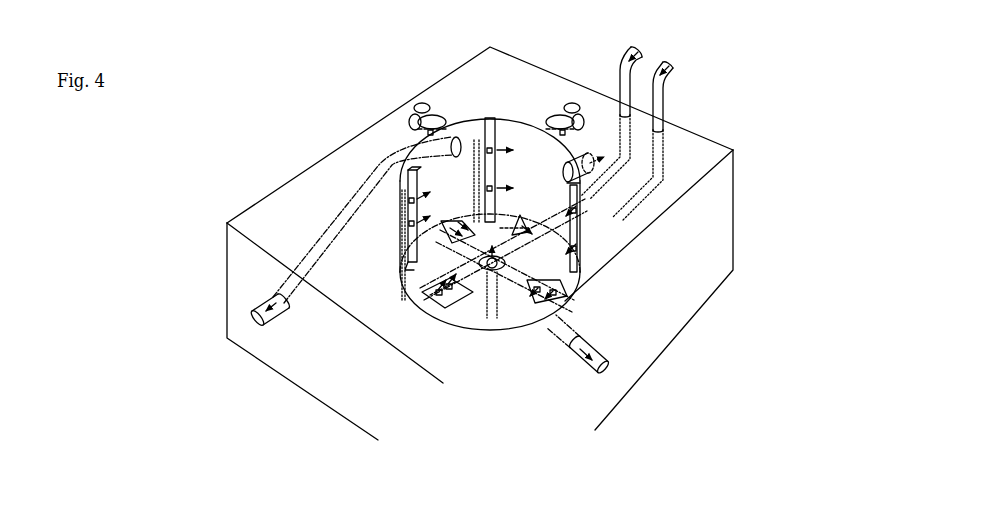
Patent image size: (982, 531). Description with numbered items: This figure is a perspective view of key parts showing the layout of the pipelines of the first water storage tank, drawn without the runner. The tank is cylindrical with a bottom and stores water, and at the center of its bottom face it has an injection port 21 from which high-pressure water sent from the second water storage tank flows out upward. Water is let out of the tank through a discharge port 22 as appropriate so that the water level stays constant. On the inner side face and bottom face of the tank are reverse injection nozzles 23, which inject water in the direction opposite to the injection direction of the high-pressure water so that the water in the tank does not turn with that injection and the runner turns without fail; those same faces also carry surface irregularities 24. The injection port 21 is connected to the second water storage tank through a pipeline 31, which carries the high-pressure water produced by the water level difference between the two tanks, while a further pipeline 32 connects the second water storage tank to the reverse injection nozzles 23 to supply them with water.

The injection port 21 is at (495, 272).
The discharge port 22 is at (253, 321).
The reverse injection nozzles 23 is at (517, 228).
The surface irregularities 24 is at (410, 185).
The pipeline 31 is at (653, 106).
The pipeline 32 is at (620, 70).